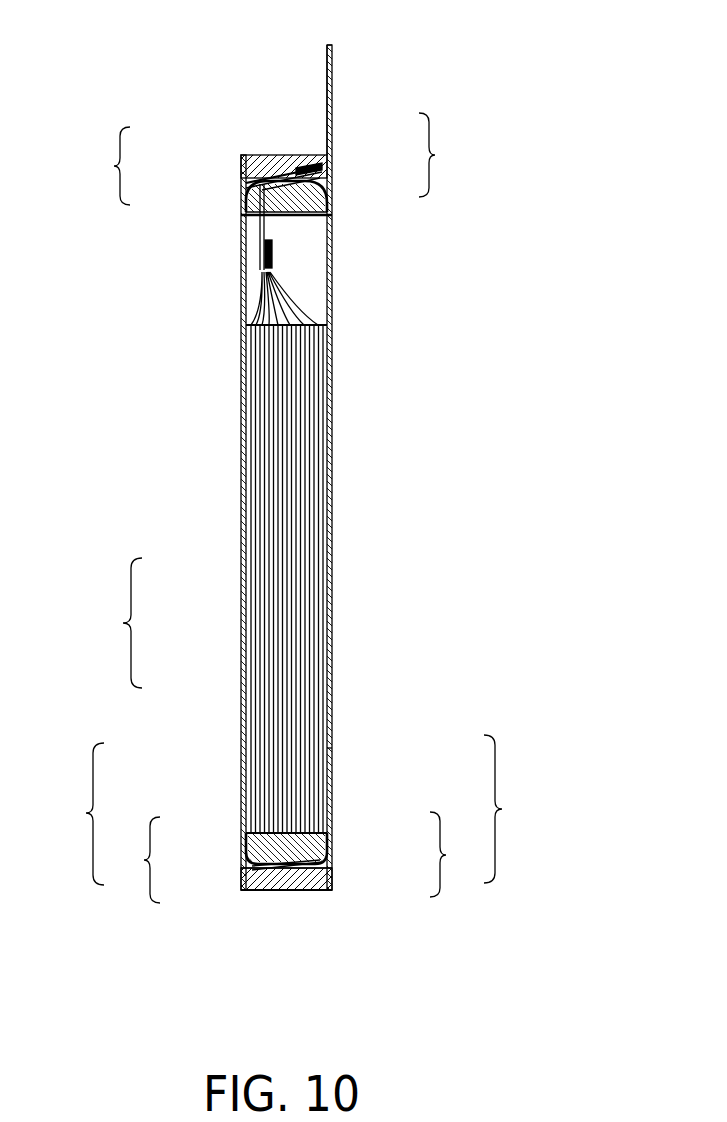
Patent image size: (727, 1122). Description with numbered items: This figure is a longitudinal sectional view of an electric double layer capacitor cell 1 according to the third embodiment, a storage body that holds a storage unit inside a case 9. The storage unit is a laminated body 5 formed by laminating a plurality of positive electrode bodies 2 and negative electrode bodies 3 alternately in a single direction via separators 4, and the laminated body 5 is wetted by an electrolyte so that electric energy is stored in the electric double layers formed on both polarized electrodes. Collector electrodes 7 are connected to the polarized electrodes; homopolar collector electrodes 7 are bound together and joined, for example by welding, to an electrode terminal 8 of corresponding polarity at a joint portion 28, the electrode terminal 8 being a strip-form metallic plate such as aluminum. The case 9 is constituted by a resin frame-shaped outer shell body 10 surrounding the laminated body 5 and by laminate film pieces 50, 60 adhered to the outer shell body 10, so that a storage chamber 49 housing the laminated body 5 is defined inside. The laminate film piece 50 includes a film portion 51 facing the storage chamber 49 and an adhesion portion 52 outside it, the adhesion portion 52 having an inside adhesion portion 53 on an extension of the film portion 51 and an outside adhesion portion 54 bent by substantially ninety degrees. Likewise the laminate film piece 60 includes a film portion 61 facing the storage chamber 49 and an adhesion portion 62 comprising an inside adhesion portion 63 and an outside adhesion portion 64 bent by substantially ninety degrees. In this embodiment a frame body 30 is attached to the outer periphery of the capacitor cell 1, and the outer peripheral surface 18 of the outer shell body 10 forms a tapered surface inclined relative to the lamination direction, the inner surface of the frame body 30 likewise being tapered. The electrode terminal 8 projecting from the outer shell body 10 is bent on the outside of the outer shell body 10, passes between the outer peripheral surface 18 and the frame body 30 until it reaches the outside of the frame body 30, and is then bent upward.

The electric double layer capacitor cell 1 is at (335, 96).
The positive electrode body 2 is at (262, 583).
The negative electrode body 3 is at (262, 628).
The separator 4 is at (262, 670).
The laminated body 5 is at (209, 579).
The collector electrode 7 is at (284, 290).
The electrode terminal 8 is at (326, 62).
The case 9 is at (348, 608).
The outer shell body 10 is at (288, 217).
The outer peripheral surface 18 is at (258, 158).
The joint portion 28 is at (276, 250).
The frame body 30 is at (292, 166).
The storage chamber 49 is at (305, 312).
The laminate film piece 50 is at (77, 814).
The film portion 51 is at (242, 752).
The adhesion portion 52 is at (119, 515).
The inside adhesion portion 53 is at (242, 212).
The outside adhesion portion 54 is at (242, 160).
The laminate film piece 60 is at (514, 809).
The film portion 61 is at (332, 748).
The adhesion portion 62 is at (453, 505).
The inside adhesion portion 63 is at (330, 201).
The outside adhesion portion 64 is at (320, 172).